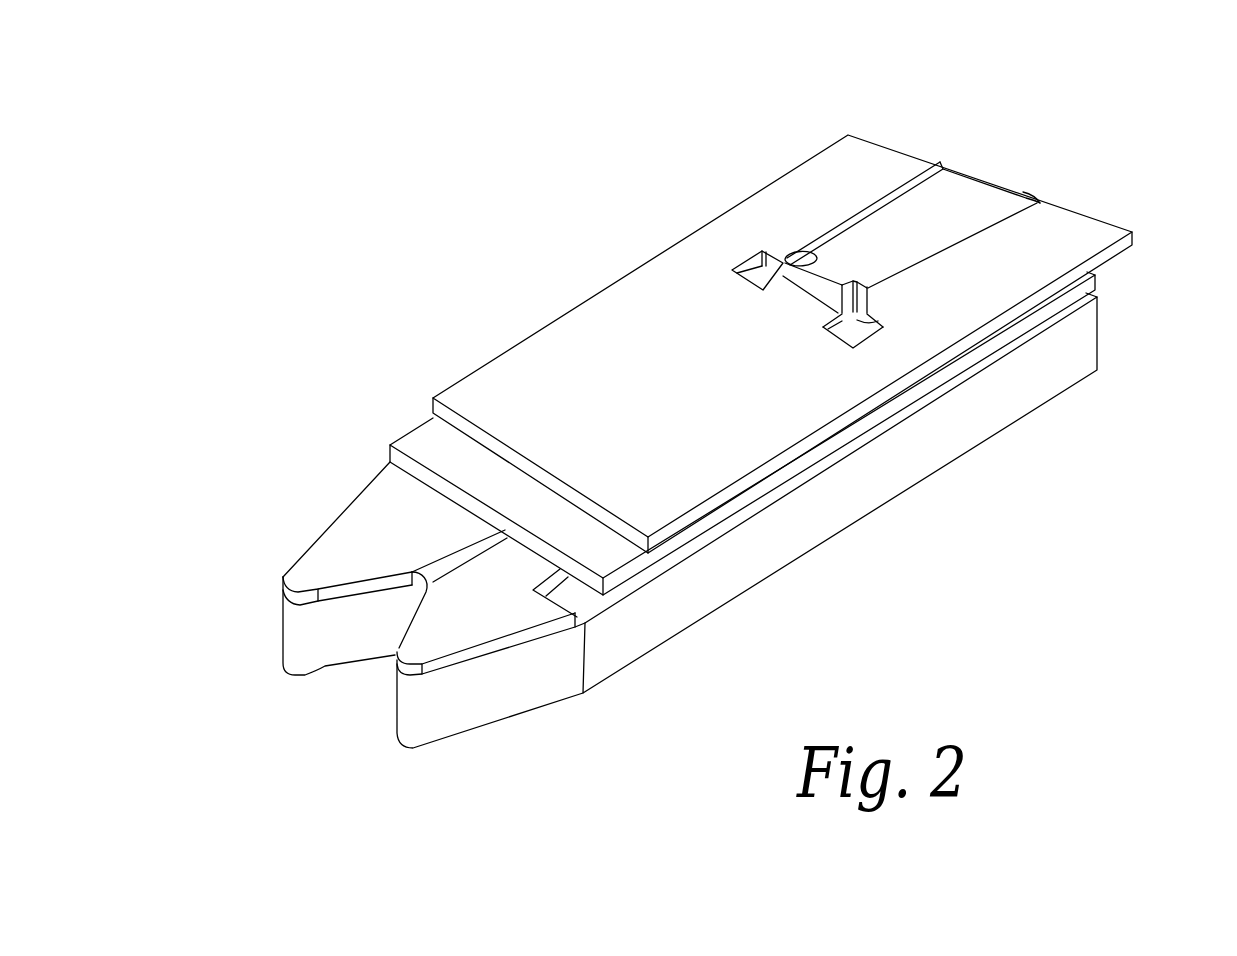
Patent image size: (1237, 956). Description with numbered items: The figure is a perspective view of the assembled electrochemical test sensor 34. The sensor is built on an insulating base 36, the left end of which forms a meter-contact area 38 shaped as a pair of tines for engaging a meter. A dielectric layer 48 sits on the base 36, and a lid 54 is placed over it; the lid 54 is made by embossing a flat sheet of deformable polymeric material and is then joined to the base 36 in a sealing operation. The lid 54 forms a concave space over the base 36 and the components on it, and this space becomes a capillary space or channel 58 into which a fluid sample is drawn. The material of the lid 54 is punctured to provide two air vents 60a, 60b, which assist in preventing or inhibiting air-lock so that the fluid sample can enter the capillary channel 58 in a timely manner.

The electrochemical test sensor 34 is at (701, 402).
The insulating base 36 is at (652, 520).
The meter-contact area 38 is at (275, 549).
The dielectric layer 48 is at (1100, 279).
The lid 54 is at (1134, 235).
The capillary space or channel 58 is at (889, 202).
The air vent 60a is at (857, 310).
The air vent 60b is at (750, 259).